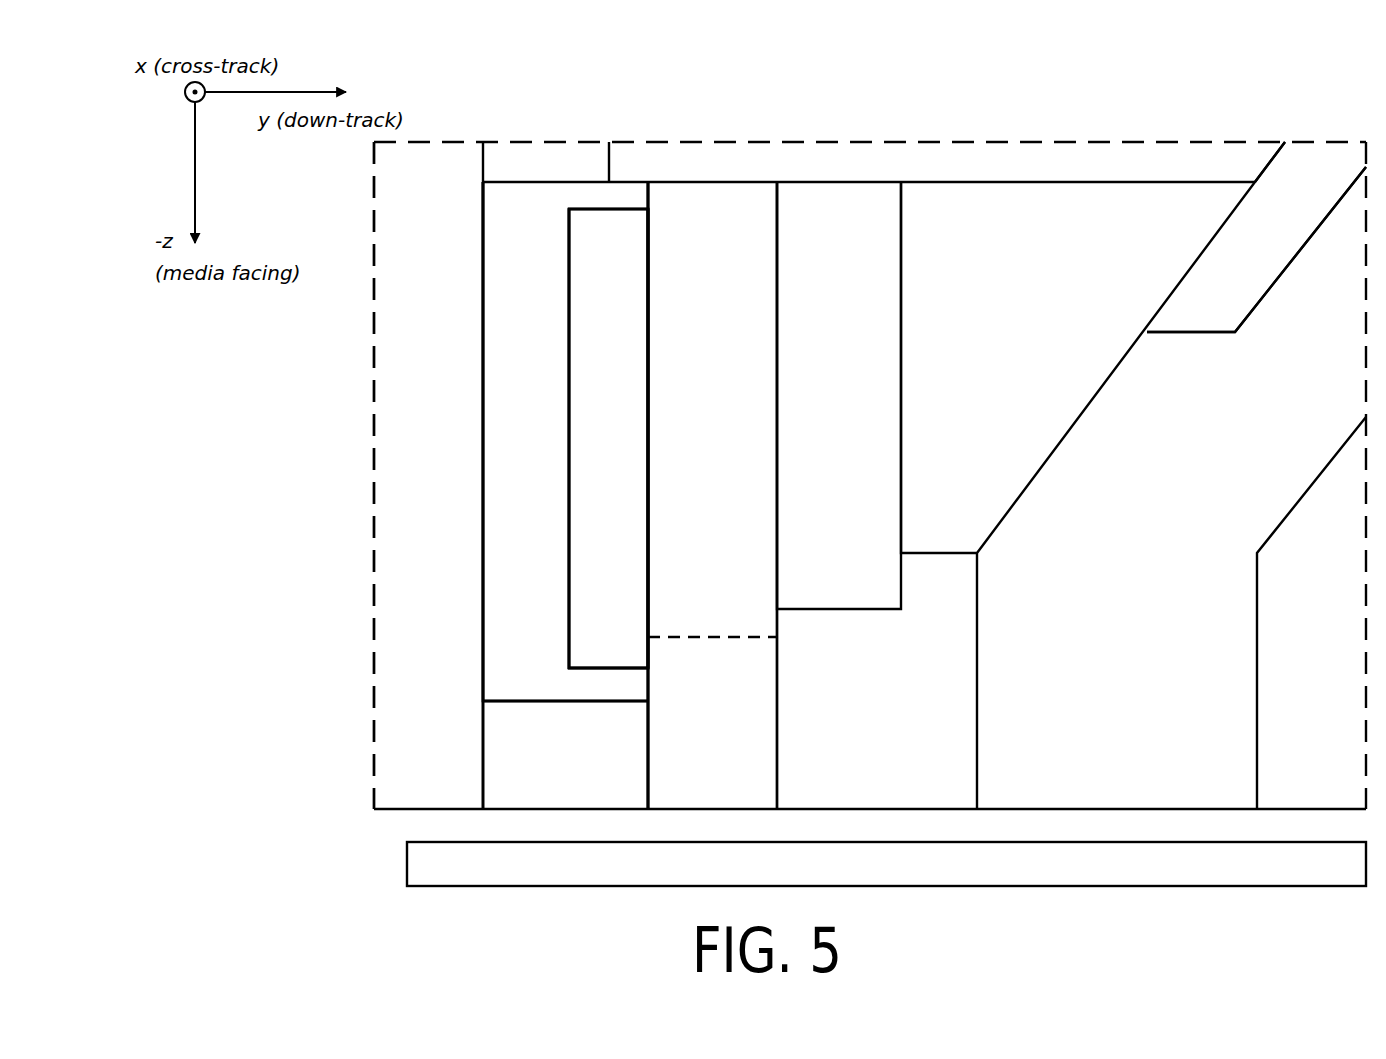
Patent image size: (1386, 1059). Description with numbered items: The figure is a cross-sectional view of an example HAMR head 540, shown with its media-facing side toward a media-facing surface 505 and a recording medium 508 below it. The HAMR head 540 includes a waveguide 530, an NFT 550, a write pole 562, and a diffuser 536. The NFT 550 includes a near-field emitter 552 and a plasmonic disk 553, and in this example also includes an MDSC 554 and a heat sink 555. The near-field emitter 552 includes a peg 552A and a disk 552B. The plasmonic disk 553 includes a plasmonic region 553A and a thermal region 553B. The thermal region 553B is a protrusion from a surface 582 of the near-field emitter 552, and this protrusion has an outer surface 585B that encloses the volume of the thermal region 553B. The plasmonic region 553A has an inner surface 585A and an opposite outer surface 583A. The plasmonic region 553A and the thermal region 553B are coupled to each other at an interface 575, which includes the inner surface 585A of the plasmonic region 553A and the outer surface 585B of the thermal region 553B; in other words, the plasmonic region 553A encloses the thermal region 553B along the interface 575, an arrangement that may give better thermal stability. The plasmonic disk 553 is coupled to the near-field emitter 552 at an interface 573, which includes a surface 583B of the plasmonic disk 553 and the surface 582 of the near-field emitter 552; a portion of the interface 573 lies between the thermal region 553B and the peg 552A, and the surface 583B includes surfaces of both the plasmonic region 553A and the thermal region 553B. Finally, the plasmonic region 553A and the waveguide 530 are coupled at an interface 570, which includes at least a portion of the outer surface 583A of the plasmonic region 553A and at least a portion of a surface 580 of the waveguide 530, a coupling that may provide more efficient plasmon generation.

The media-facing surface 505 is at (394, 810).
The magnetic media 508 is at (418, 855).
The waveguide 530 is at (415, 475).
The diffuser 536 is at (1256, 237).
The HAMR head 540 is at (1220, 122).
The NFT 550 is at (891, 163).
The near-field emitter 552 is at (712, 495).
The peg 552A is at (753, 757).
The disk 552B is at (757, 282).
The plasmonic disk 553 is at (471, 426).
The plasmonic region 553A is at (565, 441).
The thermal region 553B is at (608, 438).
The MDSC 554 is at (839, 395).
The heat sink 555 is at (1133, 475).
The write pole 562 is at (1284, 613).
The interface 570 is at (483, 196).
The interface 573 is at (649, 183).
The interface 575 is at (568, 210).
The surface of waveguide 580 is at (480, 656).
The surface of near-field emitter 582 is at (652, 373).
The outer surface of plasmonic region 583A is at (516, 188).
The surface of plasmonic disk 583B is at (645, 394).
The inner surface of plasmonic region 585A is at (586, 206).
The outer surface of thermal region 585B is at (601, 214).